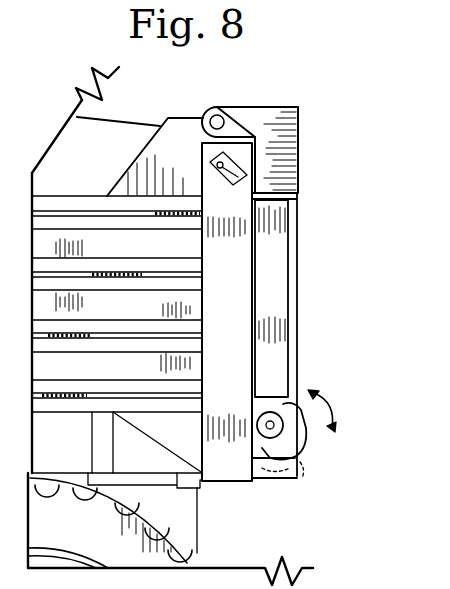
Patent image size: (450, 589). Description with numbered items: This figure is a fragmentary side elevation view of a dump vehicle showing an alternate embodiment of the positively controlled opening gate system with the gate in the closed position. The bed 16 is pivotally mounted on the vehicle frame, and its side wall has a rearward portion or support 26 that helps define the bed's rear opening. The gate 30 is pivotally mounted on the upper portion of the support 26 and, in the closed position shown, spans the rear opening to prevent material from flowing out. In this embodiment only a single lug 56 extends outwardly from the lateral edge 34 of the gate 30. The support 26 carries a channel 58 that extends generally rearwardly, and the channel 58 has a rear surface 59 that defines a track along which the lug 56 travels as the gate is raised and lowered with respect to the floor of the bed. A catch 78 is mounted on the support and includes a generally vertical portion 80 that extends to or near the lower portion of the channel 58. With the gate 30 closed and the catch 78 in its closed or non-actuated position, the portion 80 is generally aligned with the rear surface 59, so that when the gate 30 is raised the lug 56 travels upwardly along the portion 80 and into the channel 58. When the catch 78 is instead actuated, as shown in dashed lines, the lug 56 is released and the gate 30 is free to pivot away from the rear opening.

The bed 16 is at (124, 108).
The support 26 is at (243, 329).
The gate 30 is at (261, 95).
The lateral edge 34 is at (298, 120).
The rear surface 59 is at (292, 280).
The channel 58 is at (285, 279).
The lug 56 is at (288, 372).
The catch 78 is at (307, 444).
The generally vertical portion 80 is at (305, 438).